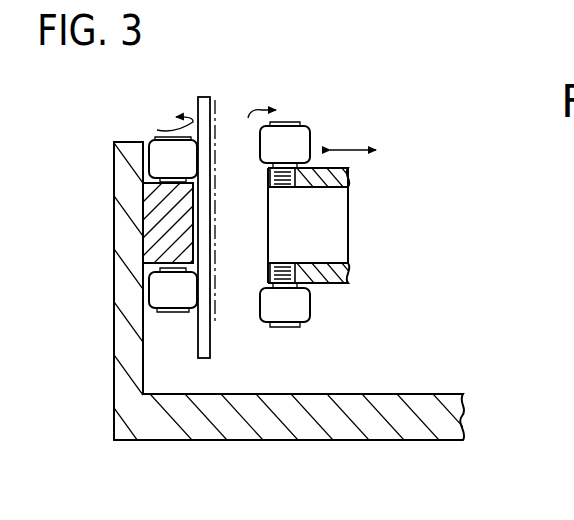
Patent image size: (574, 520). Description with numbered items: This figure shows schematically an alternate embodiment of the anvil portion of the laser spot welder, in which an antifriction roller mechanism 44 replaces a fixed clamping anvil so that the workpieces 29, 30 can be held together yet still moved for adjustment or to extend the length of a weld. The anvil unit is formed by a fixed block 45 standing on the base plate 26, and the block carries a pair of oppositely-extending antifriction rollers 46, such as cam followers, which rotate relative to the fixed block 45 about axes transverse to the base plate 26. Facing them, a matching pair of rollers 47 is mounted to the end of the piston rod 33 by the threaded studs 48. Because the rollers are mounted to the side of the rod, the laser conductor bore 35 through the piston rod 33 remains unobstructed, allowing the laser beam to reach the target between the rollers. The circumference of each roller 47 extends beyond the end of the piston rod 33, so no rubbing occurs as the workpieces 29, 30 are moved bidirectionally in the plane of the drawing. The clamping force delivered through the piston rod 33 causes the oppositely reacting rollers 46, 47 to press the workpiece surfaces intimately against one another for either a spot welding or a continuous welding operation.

The base plate 26 is at (272, 425).
The workpiece 29 is at (210, 355).
The workpiece 30 is at (213, 292).
The piston rod 33 is at (348, 283).
The laser conductor bore 35 is at (346, 188).
The antifriction roller mechanism 44 is at (130, 114).
The fixed block 45 is at (150, 240).
The antifriction rollers 46 is at (165, 150).
The rollers 47 is at (288, 140).
The threaded studs 48 is at (270, 172).